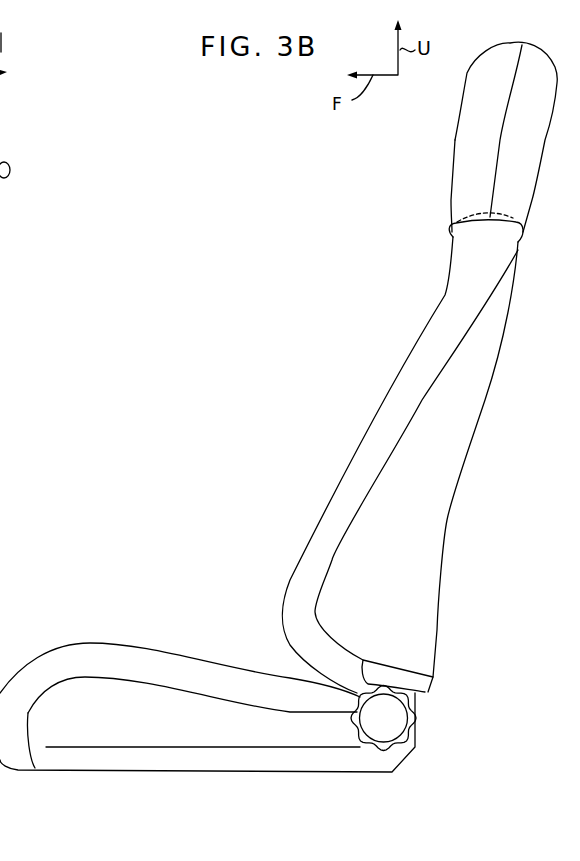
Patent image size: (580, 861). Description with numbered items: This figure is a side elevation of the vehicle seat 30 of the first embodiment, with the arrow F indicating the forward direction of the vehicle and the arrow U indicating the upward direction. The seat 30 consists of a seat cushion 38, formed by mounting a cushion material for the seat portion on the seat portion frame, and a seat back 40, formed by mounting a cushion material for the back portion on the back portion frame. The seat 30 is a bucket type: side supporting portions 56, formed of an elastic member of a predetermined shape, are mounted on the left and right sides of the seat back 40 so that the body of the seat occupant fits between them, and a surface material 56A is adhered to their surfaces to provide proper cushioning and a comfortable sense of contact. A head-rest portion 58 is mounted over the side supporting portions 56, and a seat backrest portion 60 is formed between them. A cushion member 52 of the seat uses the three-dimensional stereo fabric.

The seat 30 is at (360, 237).
The seat cushion 38 is at (135, 610).
The seat back 40 is at (348, 370).
The cushion member 52 is at (35, 668).
The side supporting portions 56 is at (360, 438).
The surface material 56A is at (358, 500).
The head-rest portion 58 is at (463, 108).
The seat backrest portion 60 is at (458, 368).